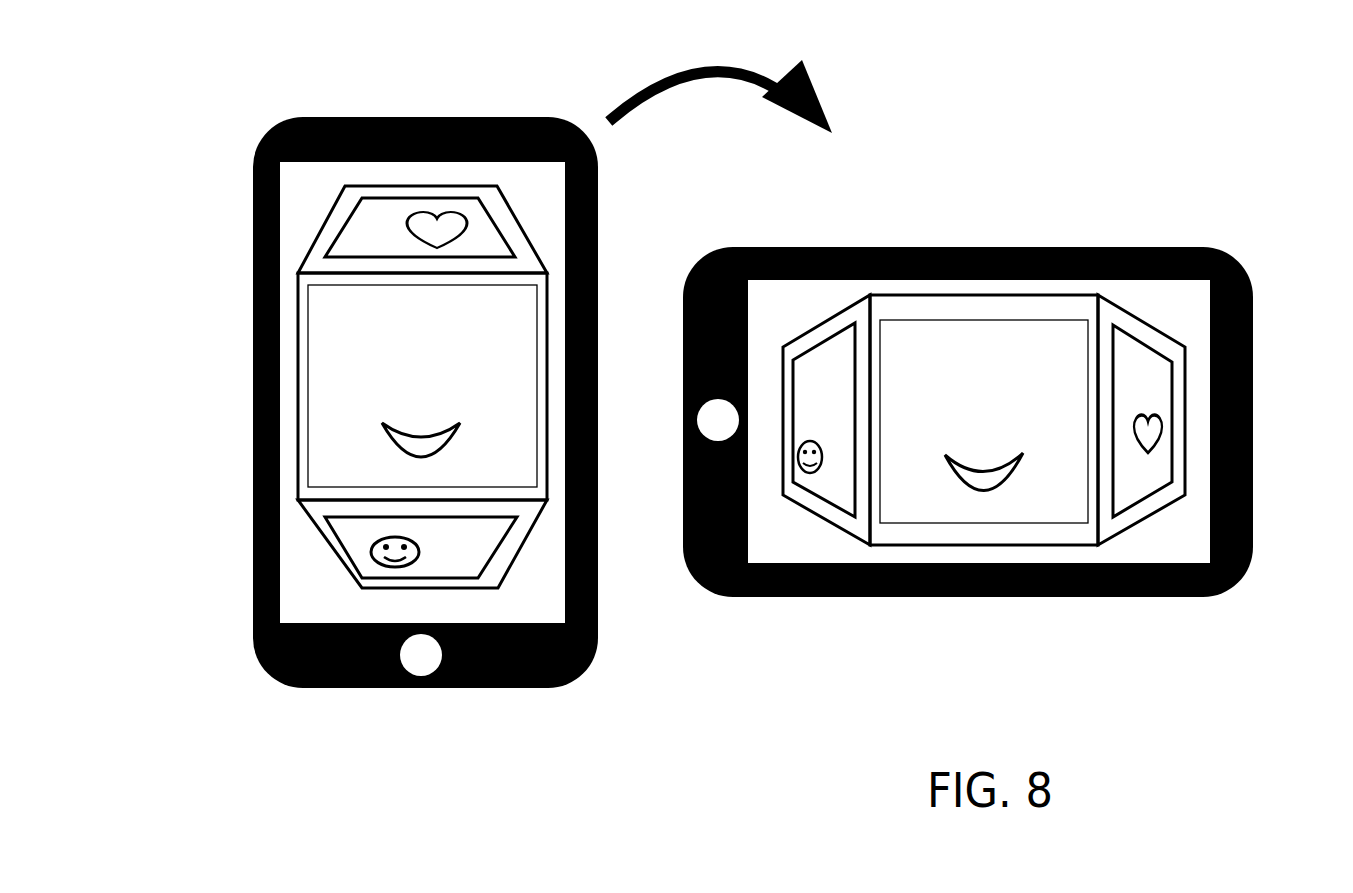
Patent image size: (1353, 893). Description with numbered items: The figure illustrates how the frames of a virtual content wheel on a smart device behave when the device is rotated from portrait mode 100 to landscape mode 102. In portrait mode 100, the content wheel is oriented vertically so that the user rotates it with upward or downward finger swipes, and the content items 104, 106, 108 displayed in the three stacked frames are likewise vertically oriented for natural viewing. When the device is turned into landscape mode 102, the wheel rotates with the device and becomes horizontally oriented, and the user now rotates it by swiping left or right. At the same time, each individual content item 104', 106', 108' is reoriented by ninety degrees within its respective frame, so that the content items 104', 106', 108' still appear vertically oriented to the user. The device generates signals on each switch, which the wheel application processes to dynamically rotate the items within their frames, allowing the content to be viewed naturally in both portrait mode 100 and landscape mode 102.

The portrait mode 100 is at (452, 117).
The landscape mode 102 is at (1000, 247).
The content item 104 is at (353, 386).
The content item 106 is at (349, 556).
The content item 108 is at (362, 223).
The content item 104' is at (1016, 489).
The content item 106' is at (811, 486).
The content item 108' is at (1199, 364).